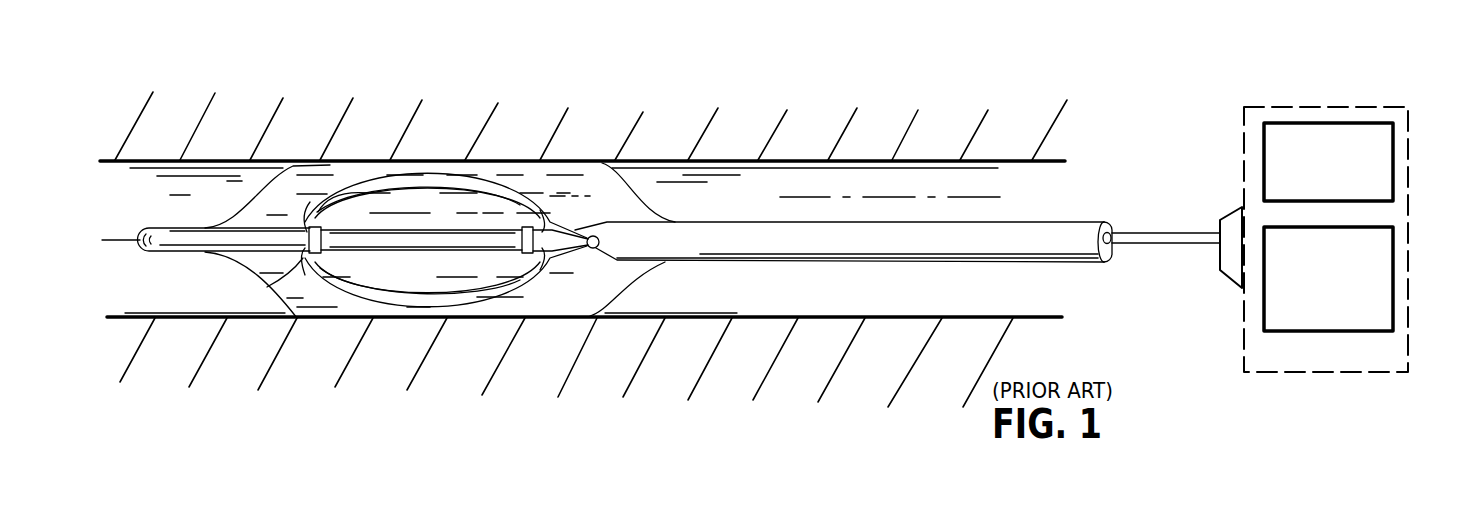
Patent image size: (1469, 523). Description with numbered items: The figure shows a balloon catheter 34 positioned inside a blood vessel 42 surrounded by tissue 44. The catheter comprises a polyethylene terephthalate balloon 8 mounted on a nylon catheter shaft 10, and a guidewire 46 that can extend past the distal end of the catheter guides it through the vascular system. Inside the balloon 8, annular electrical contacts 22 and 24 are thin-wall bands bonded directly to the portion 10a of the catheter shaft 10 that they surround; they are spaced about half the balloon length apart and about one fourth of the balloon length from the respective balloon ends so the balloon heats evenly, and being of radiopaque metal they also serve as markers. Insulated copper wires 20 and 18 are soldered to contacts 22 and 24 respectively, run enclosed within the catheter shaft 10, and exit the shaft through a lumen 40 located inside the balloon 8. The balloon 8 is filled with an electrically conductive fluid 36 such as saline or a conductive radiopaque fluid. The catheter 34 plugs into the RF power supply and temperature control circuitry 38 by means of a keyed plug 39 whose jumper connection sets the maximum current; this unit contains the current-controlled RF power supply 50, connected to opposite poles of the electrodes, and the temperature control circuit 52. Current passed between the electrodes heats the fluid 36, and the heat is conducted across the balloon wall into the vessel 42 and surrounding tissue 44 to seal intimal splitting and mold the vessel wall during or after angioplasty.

The balloon 8 is at (620, 277).
The catheter shaft 10 is at (1035, 263).
The portion of the catheter shaft 10a is at (425, 257).
The copper wire 18 is at (565, 257).
The copper wire 20 is at (360, 207).
The annular electrical contact 22 is at (267, 287).
The annular electrical contact 24 is at (537, 267).
The balloon catheter 34 is at (1078, 208).
The electrically conductive fluid 36 is at (610, 186).
The RF power supply and temperature control circuitry 38 is at (1333, 105).
The plug 39 is at (1230, 212).
The lumen 40 is at (598, 238).
The blood vessel 42 is at (957, 319).
The surrounding tissue 44 is at (790, 392).
The guidewire 46 is at (117, 240).
The RF power supply 50 is at (1395, 140).
The temperature control circuit 52 is at (1393, 273).